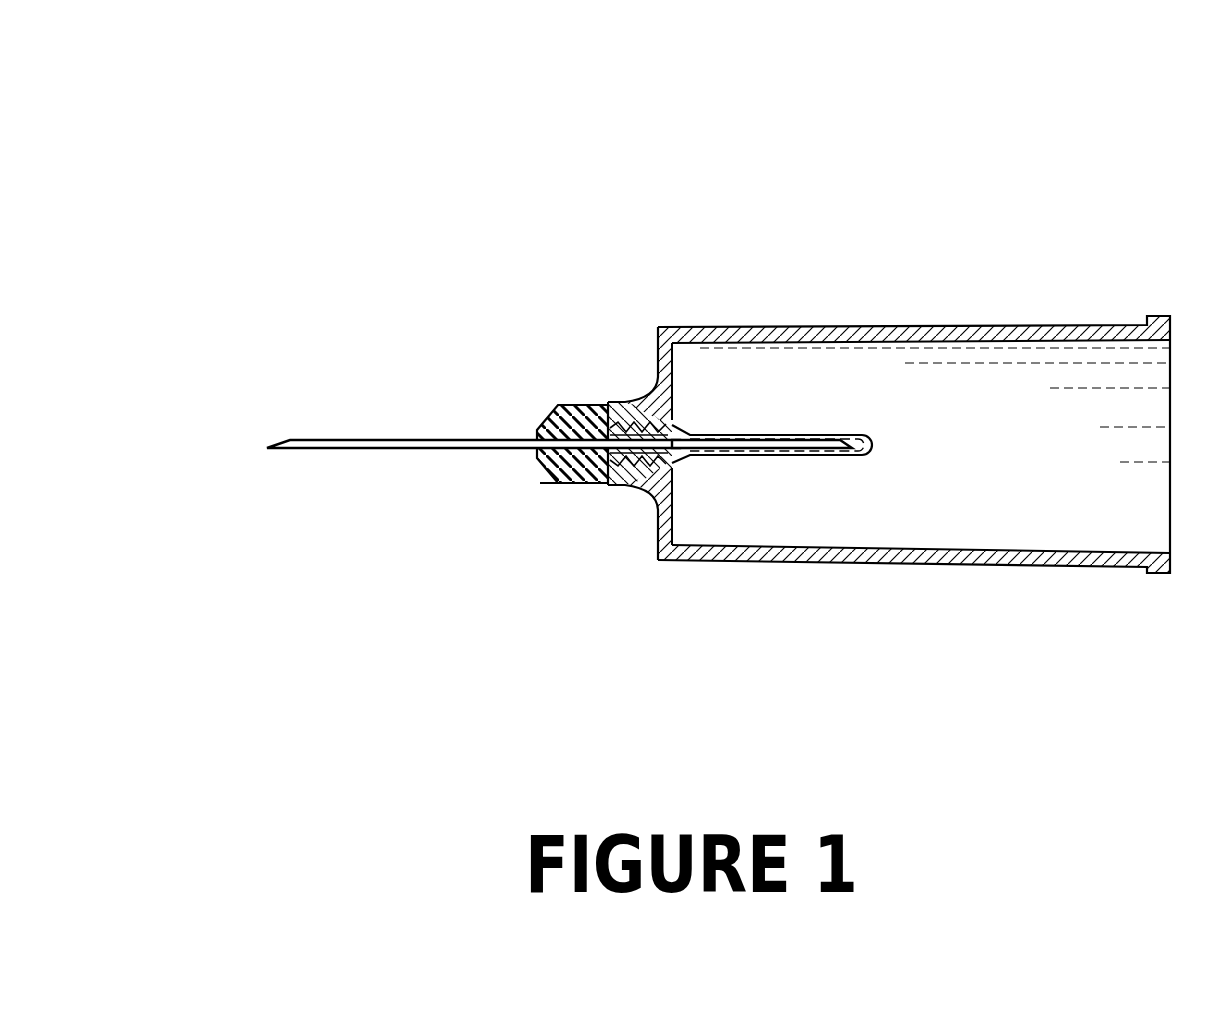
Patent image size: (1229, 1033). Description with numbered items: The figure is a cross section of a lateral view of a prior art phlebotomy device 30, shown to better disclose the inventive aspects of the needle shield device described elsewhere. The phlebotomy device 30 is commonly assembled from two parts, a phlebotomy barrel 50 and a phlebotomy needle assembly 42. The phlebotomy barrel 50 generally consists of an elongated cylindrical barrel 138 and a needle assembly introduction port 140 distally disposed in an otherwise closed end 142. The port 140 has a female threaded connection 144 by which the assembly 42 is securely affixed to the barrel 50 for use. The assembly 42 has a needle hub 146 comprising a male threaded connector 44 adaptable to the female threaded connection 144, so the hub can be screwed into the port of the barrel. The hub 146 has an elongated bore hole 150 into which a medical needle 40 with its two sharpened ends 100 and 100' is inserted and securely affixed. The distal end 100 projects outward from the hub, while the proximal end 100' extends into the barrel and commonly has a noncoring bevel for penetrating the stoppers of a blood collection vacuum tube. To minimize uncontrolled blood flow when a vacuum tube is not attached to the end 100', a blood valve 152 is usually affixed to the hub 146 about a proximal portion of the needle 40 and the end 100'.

The phlebotomy device 30 is at (849, 226).
The phlebotomy barrel 50 is at (1037, 320).
The elongated cylindrical barrel 138 is at (937, 566).
The closed end 142 is at (658, 347).
The needle assembly introduction port 140 is at (619, 410).
The elongated bore hole 150 is at (519, 441).
The female threaded connection 144 is at (620, 484).
The needle 40 is at (367, 440).
The phlebotomy needle assembly 42 is at (575, 395).
The needle hub 146 is at (560, 486).
The sharpened end 100 is at (411, 392).
The male threaded connector 44 is at (690, 420).
The blood valve 152 is at (783, 432).
The sharpened end 100' is at (848, 414).